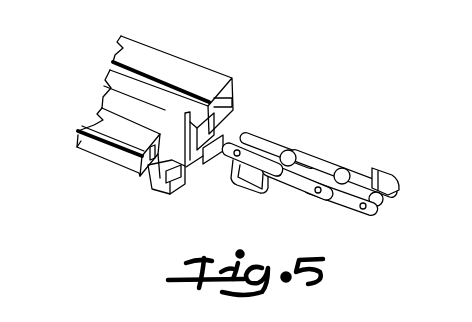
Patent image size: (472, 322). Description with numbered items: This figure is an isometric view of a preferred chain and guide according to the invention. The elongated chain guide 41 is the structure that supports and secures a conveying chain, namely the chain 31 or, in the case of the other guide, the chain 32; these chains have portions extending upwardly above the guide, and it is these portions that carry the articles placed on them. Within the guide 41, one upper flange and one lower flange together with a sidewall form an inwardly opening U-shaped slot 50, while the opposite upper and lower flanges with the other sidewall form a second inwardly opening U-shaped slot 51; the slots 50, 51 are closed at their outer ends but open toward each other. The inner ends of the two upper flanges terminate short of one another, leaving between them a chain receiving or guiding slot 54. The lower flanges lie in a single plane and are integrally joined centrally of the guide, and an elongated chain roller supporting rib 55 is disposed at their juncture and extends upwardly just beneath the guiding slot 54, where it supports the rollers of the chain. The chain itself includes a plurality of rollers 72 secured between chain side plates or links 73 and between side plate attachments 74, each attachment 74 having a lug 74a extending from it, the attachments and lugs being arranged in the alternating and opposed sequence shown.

The elongated chain guide 41 is at (208, 13).
The chain receiving or guiding slot 54 is at (188, 93).
The inwardly opening U-shaped slot 51 is at (222, 101).
The elongated chain roller supporting rib 55 is at (122, 93).
The inwardly opening U-shaped slot 50 is at (158, 172).
The conveying chain 31 is at (333, 155).
The conveying chain 32 is at (333, 155).
The side plate attachment 74 is at (243, 158).
The lug 74a is at (259, 191).
The chain side plate or link 73 is at (317, 170).
The roller 72 is at (377, 207).